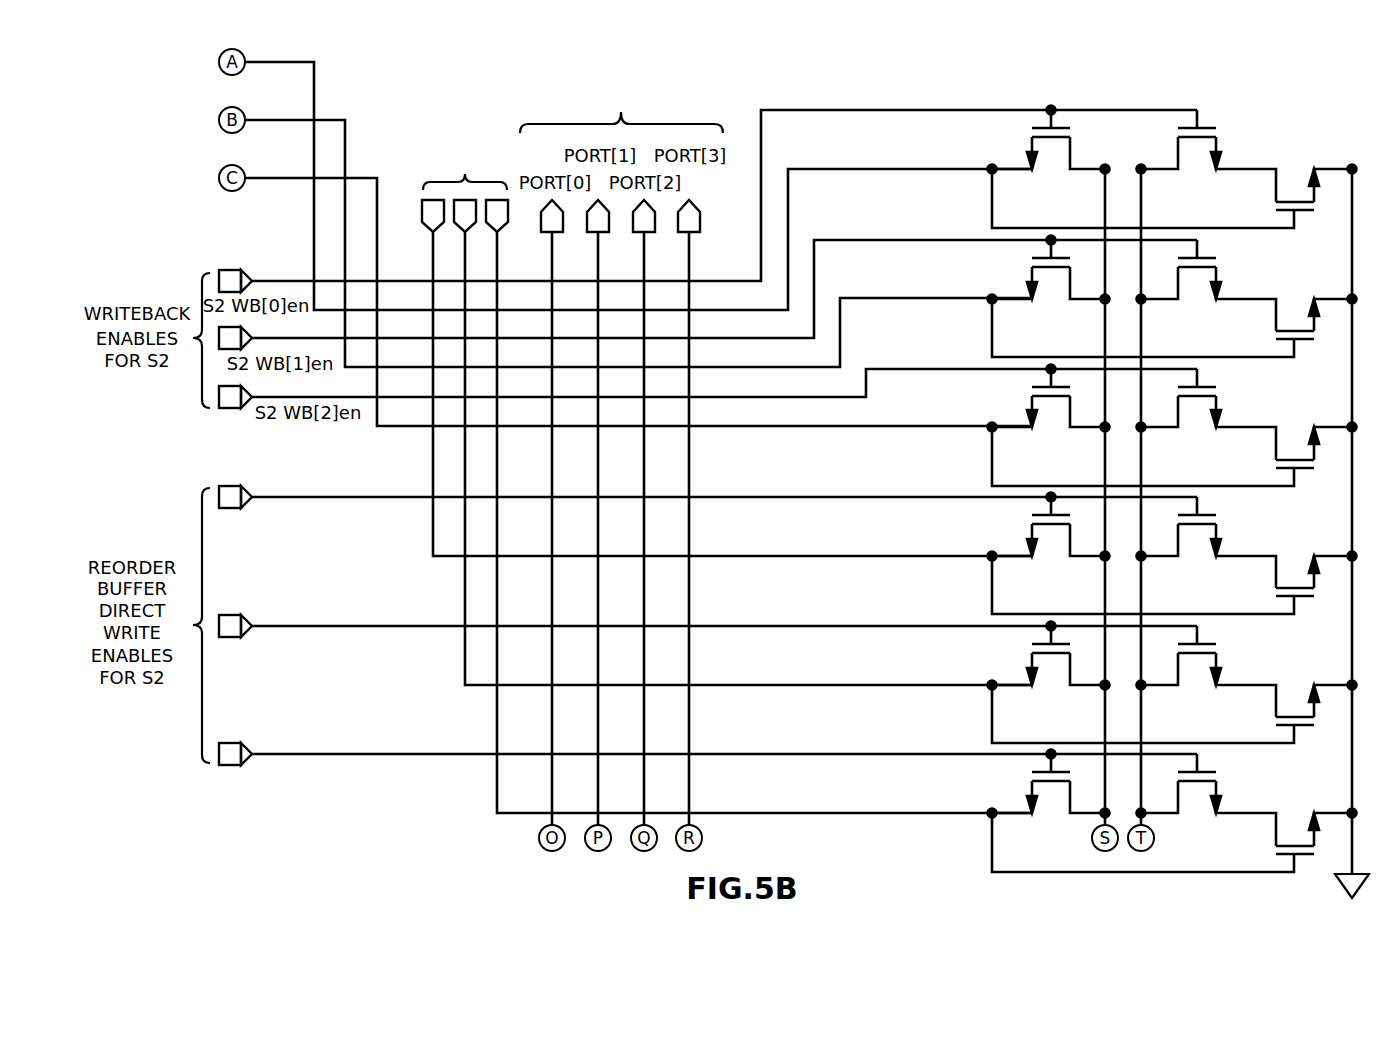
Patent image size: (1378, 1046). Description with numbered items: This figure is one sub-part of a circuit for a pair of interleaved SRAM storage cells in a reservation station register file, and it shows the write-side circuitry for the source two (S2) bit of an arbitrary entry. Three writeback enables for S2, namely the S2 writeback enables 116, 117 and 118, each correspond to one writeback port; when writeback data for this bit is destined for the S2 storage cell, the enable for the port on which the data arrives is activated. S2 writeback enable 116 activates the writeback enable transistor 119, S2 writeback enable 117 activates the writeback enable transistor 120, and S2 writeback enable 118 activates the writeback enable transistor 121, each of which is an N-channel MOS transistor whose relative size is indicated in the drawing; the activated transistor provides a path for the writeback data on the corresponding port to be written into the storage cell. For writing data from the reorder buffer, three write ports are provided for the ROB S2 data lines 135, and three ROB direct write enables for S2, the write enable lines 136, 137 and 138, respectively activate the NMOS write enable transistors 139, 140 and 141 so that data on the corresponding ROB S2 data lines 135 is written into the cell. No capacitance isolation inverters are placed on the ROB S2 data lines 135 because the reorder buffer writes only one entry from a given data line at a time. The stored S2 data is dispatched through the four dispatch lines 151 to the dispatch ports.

The S2 writeback enable 116 is at (247, 272).
The S2 writeback enable 117 is at (253, 331).
The S2 writeback enable 118 is at (233, 409).
The writeback enable transistor 119 is at (1029, 147).
The writeback enable transistor 120 is at (1029, 277).
The writeback enable transistor 121 is at (1029, 405).
The ROB S2 data lines 135 is at (436, 92).
The ROB direct write enable line 136 is at (232, 509).
The ROB direct write enable line 137 is at (232, 638).
The ROB direct write enable line 138 is at (232, 766).
The write enable transistor 139 is at (1029, 528).
The write enable transistor 140 is at (1029, 657).
The write enable transistor 141 is at (1029, 785).
The dispatch lines 151 is at (722, 68).